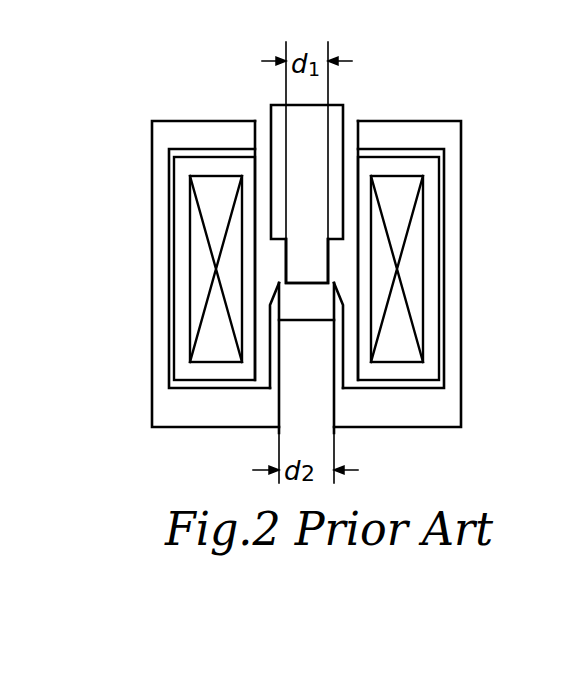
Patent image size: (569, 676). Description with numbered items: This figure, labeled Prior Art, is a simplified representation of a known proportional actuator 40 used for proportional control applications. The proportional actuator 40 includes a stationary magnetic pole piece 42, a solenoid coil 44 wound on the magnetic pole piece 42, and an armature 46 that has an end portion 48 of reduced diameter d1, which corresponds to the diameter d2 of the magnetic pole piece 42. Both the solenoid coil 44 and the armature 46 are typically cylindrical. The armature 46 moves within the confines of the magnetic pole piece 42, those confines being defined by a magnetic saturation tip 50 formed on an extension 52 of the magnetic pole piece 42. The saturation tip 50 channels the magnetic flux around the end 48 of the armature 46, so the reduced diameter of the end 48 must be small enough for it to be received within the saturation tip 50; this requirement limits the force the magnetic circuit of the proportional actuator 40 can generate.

The proportional actuator 40 is at (145, 267).
The stationary magnetic pole piece 42 is at (198, 414).
The solenoid coil 44 is at (186, 190).
The armature 46 is at (333, 121).
The end portion of reduced diameter 48 is at (307, 265).
The magnetic saturation tip 50 is at (340, 303).
The extension of the magnetic pole piece 52 is at (313, 371).